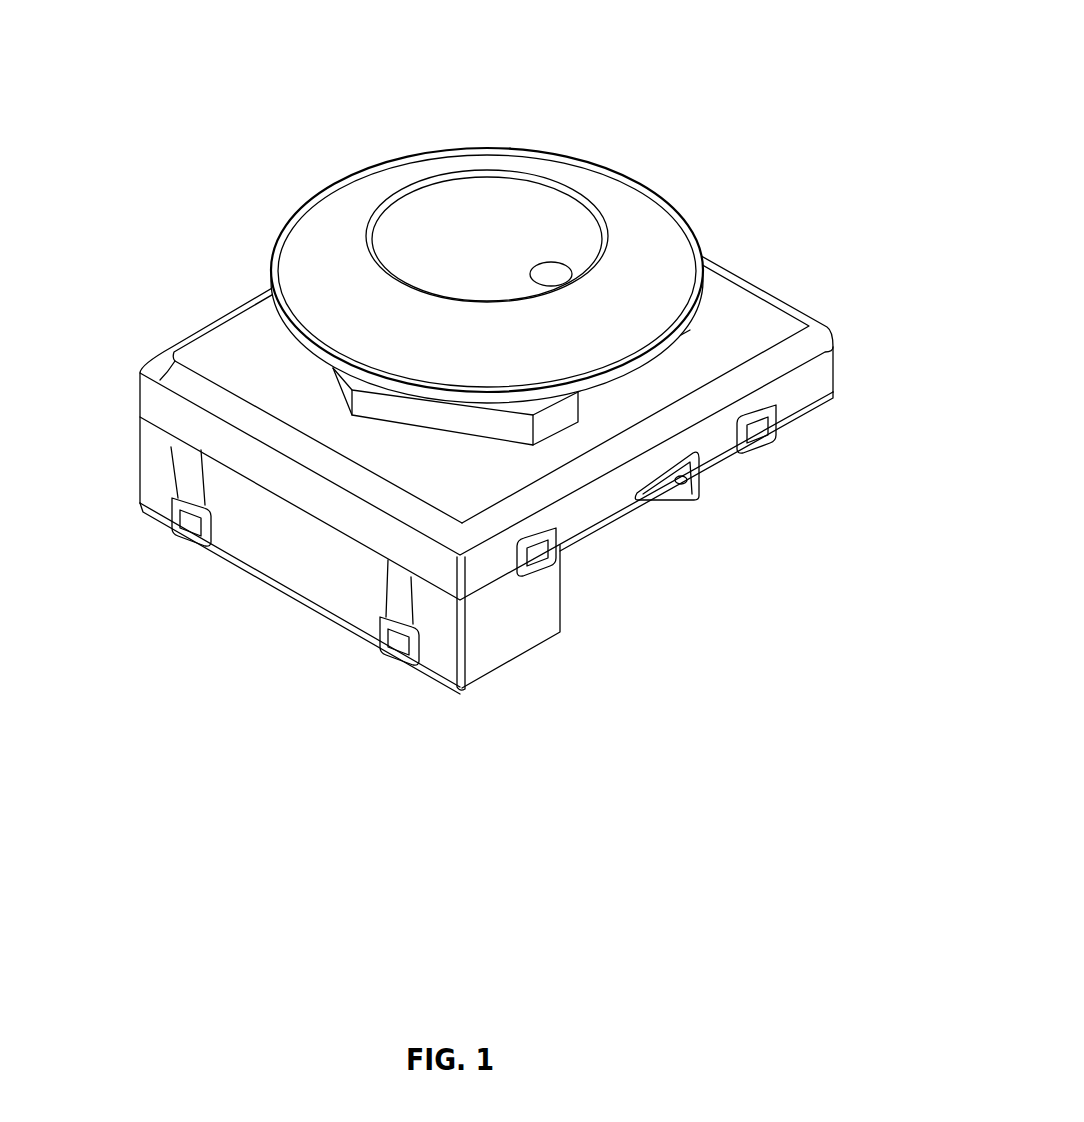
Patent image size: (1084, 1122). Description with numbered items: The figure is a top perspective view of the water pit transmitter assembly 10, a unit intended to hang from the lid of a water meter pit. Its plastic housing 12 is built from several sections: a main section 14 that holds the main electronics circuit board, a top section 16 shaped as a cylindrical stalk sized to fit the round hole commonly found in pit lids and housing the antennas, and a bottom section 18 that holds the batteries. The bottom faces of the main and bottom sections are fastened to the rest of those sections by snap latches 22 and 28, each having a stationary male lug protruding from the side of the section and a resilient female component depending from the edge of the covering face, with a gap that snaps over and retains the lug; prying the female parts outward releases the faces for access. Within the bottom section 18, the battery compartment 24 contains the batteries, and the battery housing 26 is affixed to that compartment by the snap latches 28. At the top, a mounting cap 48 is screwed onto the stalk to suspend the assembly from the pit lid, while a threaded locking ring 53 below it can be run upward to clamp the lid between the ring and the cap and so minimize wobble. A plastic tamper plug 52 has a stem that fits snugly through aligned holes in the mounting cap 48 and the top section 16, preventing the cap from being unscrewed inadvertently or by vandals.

The water pit transmitter assembly 10 is at (287, 190).
The housing 12 is at (130, 455).
The main section 14 is at (840, 346).
The top section 16 is at (698, 240).
The bottom section 18 is at (573, 580).
The snap latches 22 is at (810, 470).
The battery compartment 24 is at (518, 633).
The battery housing 26 is at (303, 548).
The snap latches 28 is at (180, 530).
The mounting cap 48 is at (430, 163).
The tamper plug 52 is at (556, 274).
The threaded locking ring 53 is at (665, 360).